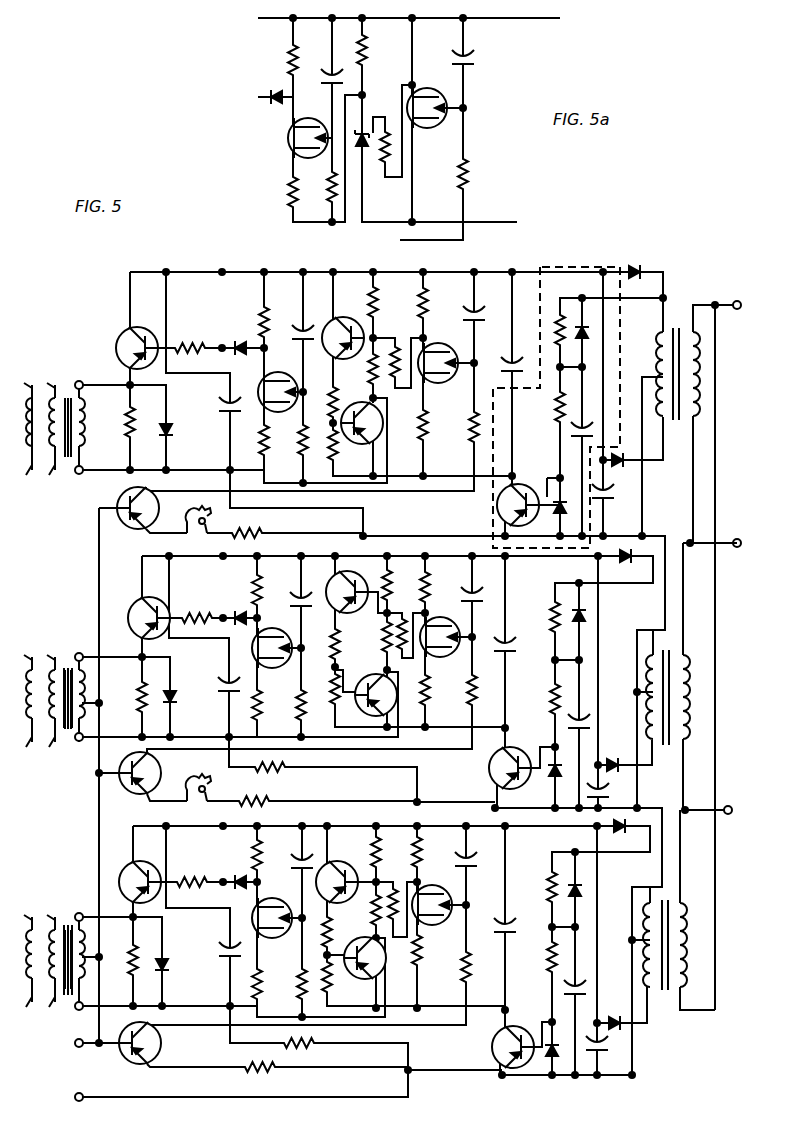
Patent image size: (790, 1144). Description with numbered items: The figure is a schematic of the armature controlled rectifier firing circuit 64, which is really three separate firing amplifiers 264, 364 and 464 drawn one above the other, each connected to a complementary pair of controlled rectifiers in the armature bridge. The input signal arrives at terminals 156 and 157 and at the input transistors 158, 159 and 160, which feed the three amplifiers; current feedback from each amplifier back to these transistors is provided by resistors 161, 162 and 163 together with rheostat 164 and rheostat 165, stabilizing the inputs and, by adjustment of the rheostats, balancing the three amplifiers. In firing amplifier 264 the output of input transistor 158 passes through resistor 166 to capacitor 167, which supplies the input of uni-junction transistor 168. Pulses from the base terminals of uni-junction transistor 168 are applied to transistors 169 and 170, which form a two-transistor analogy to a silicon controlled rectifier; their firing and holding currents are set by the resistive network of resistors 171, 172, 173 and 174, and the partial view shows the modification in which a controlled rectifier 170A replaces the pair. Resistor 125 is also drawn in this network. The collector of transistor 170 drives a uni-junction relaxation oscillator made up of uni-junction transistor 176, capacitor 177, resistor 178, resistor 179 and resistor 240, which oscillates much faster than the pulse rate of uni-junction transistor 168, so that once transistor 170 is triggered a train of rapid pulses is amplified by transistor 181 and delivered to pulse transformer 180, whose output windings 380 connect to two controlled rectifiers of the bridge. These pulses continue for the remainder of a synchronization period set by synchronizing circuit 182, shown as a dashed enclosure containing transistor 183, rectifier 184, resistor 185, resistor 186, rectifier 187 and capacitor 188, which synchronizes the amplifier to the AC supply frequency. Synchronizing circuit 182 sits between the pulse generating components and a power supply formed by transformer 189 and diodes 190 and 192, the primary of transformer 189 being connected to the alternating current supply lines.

In FIG. 5, the armature controlled rectifier firing circuit 64 is at (395, 270).
In FIG. 5, the resistor 125 is at (328, 455).
In FIG. 5, the input terminal 156 is at (75, 1050).
In FIG. 5, the input terminal 157 is at (75, 1102).
In FIG. 5, the input transistor 158 is at (118, 498).
In FIG. 5, the input transistor 159 is at (160, 768).
In FIG. 5, the input transistor 160 is at (160, 1049).
In FIG. 5, the resistor 161 is at (258, 530).
In FIG. 5, the resistor 162 is at (265, 803).
In FIG. 5, the resistor 163 is at (255, 1075).
In FIG. 5, the rheostat 164 is at (188, 528).
In FIG. 5, the rheostat 165 is at (205, 795).
In FIG. 5a, the resistor 166 is at (462, 178).
In FIG. 5, the resistor 166 is at (470, 432).
In FIG. 5a, the capacitor 167 is at (458, 60).
In FIG. 5, the capacitor 167 is at (470, 310).
In FIG. 5a, the uni-junction transistor 168 is at (428, 127).
In FIG. 5, the uni-junction transistor 168 is at (432, 383).
In FIG. 5, the transistor 169 is at (332, 320).
In FIG. 5, the transistor 170 is at (365, 445).
In FIG. 5a, the controlled rectifier 170A is at (365, 160).
In FIG. 5a, the resistor 171 is at (368, 60).
In FIG. 5, the resistor 171 is at (375, 305).
In FIG. 5, the resistor 172 is at (333, 382).
In FIG. 5a, the resistor 173 is at (388, 120).
In FIG. 5, the resistor 173 is at (392, 355).
In FIG. 5, the resistor 174 is at (327, 388).
In FIG. 5a, the uni-junction transistor 176 is at (288, 128).
In FIG. 5, the uni-junction transistor 176 is at (258, 380).
In FIG. 5a, the capacitor 177 is at (330, 72).
In FIG. 5, the capacitor 177 is at (302, 329).
In FIG. 5a, the resistor 178 is at (290, 58).
In FIG. 5, the resistor 178 is at (264, 318).
In FIG. 5a, the resistor 179 is at (290, 195).
In FIG. 5, the resistor 179 is at (262, 447).
In FIG. 5, the pulse transformer 180 is at (70, 375).
In FIG. 5, the transistor 181 is at (124, 334).
In FIG. 5, the synchronizing circuit 182 is at (580, 267).
In FIG. 5, the transistor 183 is at (535, 492).
In FIG. 5, the rectifier 184 is at (590, 510).
In FIG. 5, the resistor 185 is at (560, 415).
In FIG. 5, the resistor 186 is at (557, 327).
In FIG. 5, the rectifier 187 is at (585, 337).
In FIG. 5, the capacitor 188 is at (578, 430).
In FIG. 5, the transformer 189 is at (680, 305).
In FIG. 5, the diode 190 is at (640, 275).
In FIG. 5, the diode 192 is at (620, 463).
In FIG. 5a, the resistor 240 is at (325, 205).
In FIG. 5, the resistor 240 is at (303, 452).
In FIG. 5, the firing amplifier 264 is at (120, 290).
In FIG. 5, the firing amplifier 364 is at (90, 597).
In FIG. 5, the output windings 380 is at (40, 451).
In FIG. 5, the firing amplifier 464 is at (90, 860).